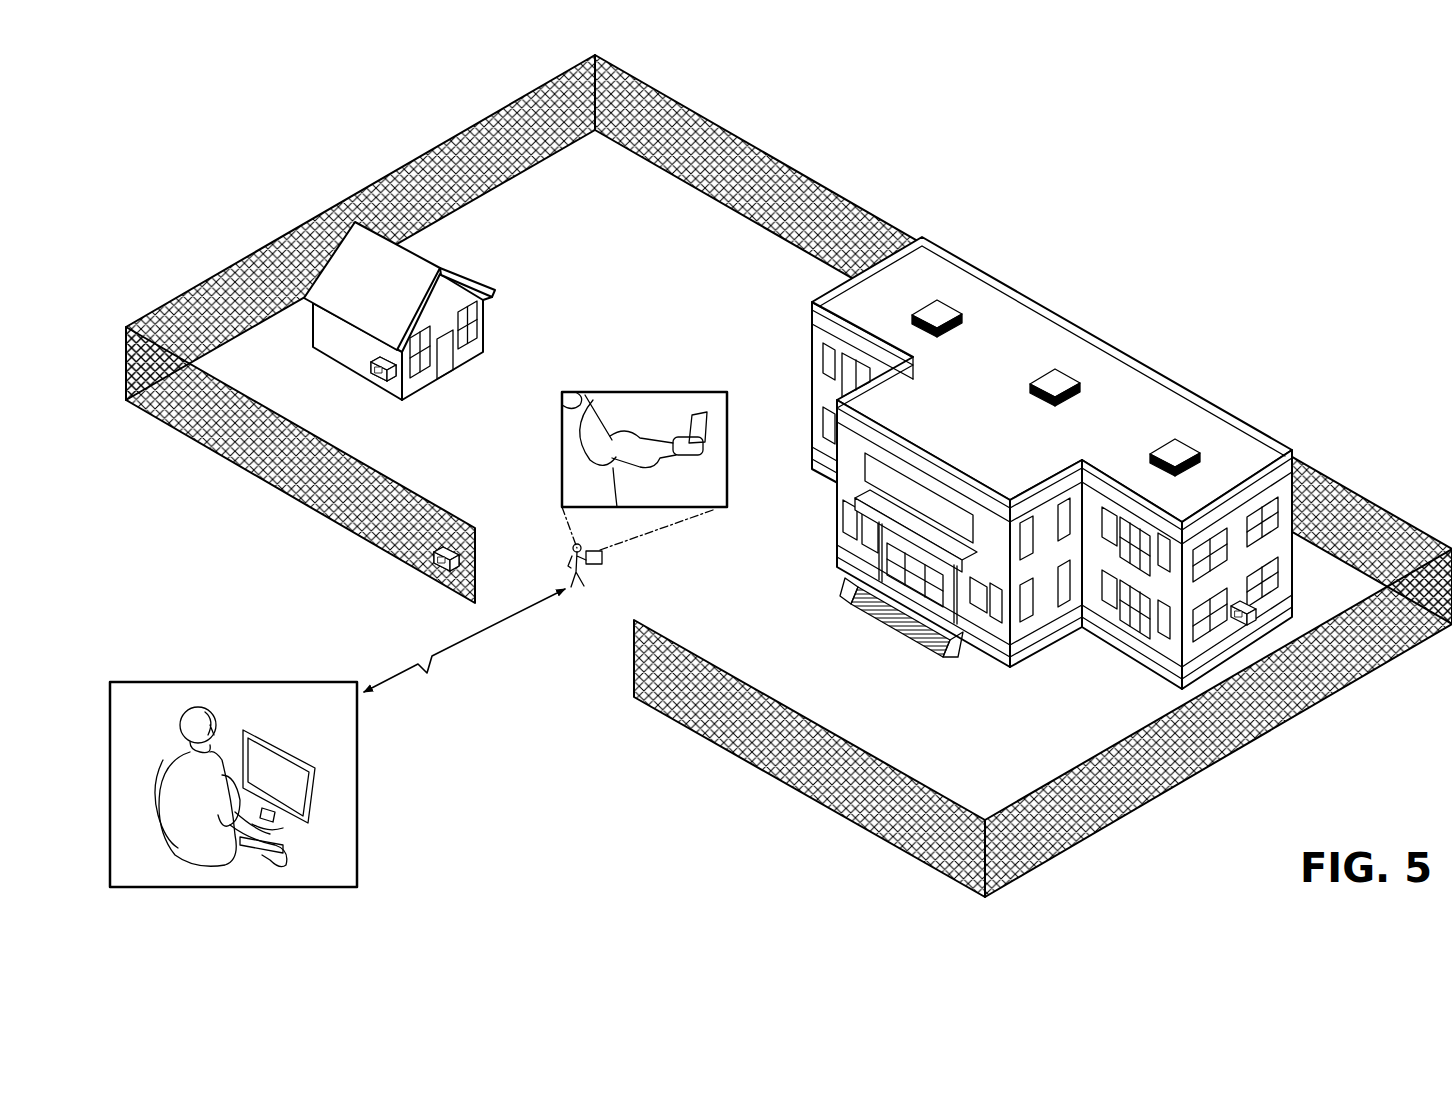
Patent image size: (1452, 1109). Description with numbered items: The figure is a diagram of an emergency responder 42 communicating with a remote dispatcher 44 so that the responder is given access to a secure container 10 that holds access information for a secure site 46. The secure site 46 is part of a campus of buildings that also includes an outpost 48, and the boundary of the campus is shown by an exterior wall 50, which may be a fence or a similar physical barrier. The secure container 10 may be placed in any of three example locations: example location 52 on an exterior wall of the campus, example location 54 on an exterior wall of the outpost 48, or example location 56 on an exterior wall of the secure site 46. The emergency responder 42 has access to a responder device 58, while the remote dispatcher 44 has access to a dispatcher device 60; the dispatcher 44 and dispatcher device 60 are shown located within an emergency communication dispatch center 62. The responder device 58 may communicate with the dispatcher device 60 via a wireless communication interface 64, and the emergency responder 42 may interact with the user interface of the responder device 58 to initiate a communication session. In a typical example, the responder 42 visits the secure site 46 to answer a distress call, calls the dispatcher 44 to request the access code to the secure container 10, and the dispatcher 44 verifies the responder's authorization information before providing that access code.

The secure container 10 is at (379, 381).
The emergency responder 42 is at (577, 546).
The remote dispatcher 44 is at (180, 750).
The secure site 46 is at (1226, 407).
The outpost 48 is at (465, 265).
The exterior wall 50 is at (162, 307).
The example location 52 is at (430, 562).
The example location 54 is at (366, 363).
The example location 56 is at (1260, 611).
The responder device 58 is at (708, 403).
The dispatcher device 60 is at (302, 757).
The emergency communication dispatch center 62 is at (125, 682).
The wireless communication interface 64 is at (432, 662).